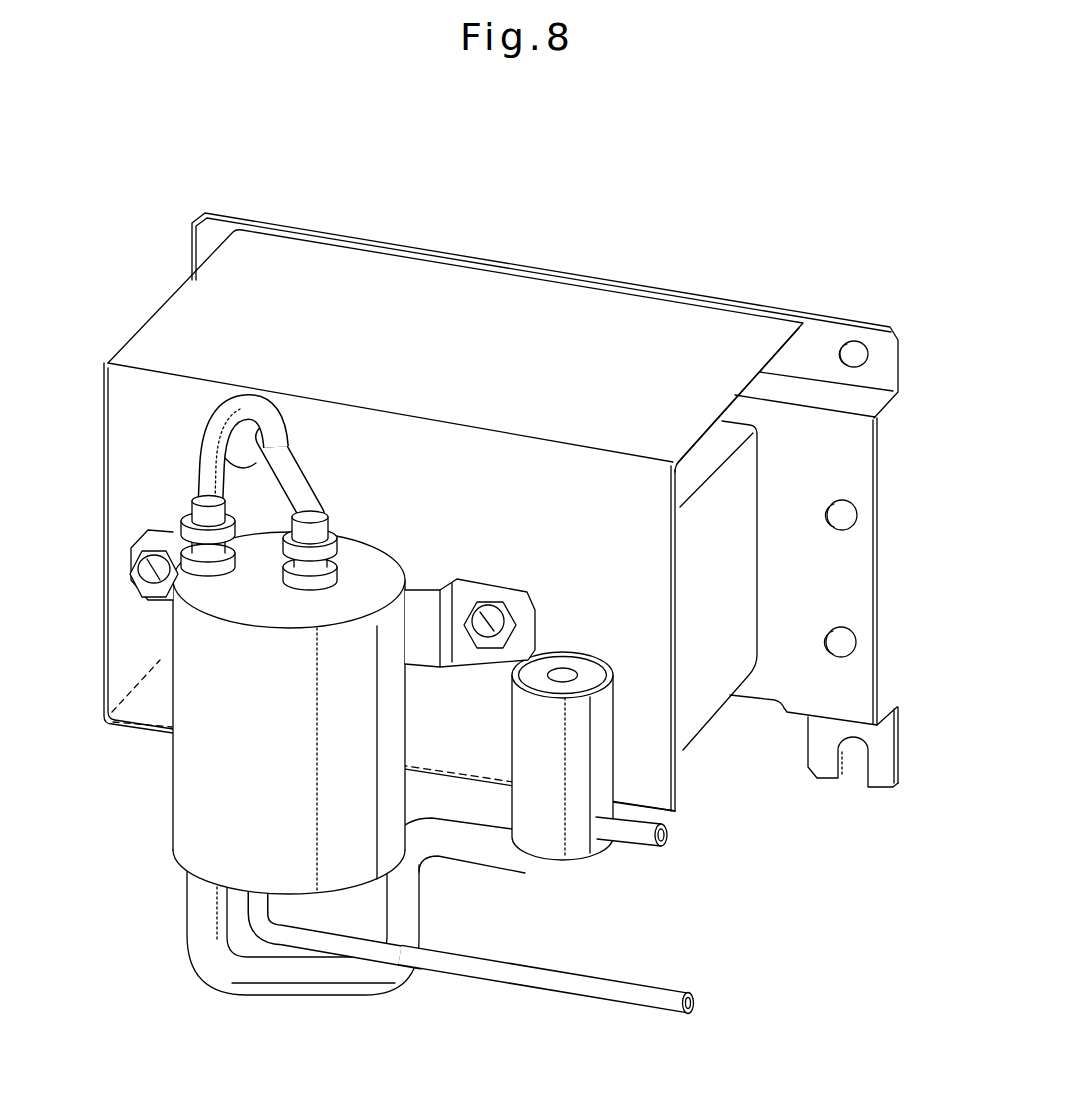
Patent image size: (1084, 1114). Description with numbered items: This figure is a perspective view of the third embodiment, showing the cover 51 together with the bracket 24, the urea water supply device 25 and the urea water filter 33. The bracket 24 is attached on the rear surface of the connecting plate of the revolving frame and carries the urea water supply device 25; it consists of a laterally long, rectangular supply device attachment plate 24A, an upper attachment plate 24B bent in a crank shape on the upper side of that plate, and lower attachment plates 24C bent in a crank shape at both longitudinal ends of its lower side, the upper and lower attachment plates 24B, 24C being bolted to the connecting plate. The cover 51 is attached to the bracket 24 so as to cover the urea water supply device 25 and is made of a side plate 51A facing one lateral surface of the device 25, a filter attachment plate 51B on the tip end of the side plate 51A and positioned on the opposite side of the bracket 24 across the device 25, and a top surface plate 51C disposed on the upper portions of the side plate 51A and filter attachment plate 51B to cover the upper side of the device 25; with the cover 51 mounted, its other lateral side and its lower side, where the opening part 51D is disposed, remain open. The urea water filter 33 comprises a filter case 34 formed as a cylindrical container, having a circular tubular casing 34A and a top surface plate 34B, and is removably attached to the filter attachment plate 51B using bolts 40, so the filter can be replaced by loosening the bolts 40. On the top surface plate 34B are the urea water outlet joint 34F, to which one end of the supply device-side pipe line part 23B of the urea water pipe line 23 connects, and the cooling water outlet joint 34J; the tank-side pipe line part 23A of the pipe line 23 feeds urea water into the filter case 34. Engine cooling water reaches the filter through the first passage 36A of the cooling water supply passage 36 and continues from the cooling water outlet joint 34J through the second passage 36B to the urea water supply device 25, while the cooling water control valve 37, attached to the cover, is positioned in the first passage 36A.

The cover 51 is at (452, 285).
The side plate 51A is at (117, 660).
The filter attachment plate 51B is at (622, 540).
The top surface plate 51C is at (568, 335).
The opening part 51D is at (148, 707).
The bracket 24 is at (810, 330).
The supply device attachment plate 24A is at (835, 456).
The upper attachment plate 24B is at (861, 335).
The lower attachment plate 24C is at (880, 770).
The urea water supply device 25 is at (718, 600).
The urea water filter 33 is at (174, 771).
The filter case 34 is at (200, 803).
The circular tubular casing 34A is at (213, 832).
The top surface plate 34B is at (383, 565).
The cooling water outlet joint 34J is at (212, 562).
The urea water outlet joint 34F is at (368, 573).
The cooling water supply passage 36 is at (270, 985).
The first passage 36A is at (337, 976).
The second passage 36B is at (190, 470).
The urea water pipe line 23 is at (455, 965).
The tank-side pipe line part 23A is at (550, 991).
The supply device-side pipe line part 23B is at (290, 480).
The cooling water control valve 37 is at (572, 833).
The bolts 40 is at (143, 570).